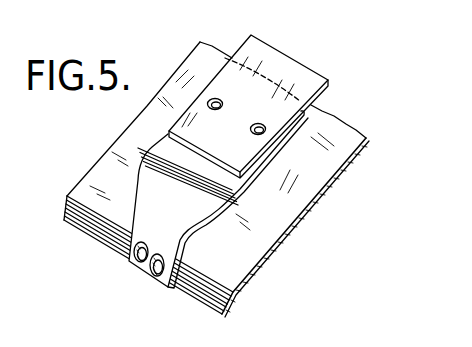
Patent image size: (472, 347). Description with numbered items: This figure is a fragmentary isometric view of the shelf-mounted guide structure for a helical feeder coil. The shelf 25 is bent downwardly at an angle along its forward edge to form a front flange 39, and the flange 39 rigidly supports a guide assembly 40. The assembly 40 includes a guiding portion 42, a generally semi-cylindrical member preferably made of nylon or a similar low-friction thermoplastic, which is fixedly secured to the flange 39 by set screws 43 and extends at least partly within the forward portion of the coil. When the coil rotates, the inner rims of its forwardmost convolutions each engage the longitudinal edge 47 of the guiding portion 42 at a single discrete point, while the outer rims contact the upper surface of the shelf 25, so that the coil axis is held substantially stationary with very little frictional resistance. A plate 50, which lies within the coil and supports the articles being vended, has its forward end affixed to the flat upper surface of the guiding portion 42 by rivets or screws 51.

The shelf 25 is at (100, 161).
The front flange 39 is at (189, 294).
The guide assembly 40 is at (132, 210).
The guiding portion 42 is at (231, 189).
The set screws 43 is at (160, 275).
The longitudinal edge 47 is at (200, 77).
The plate 50 is at (288, 63).
The rivets or screws 51 is at (258, 124).